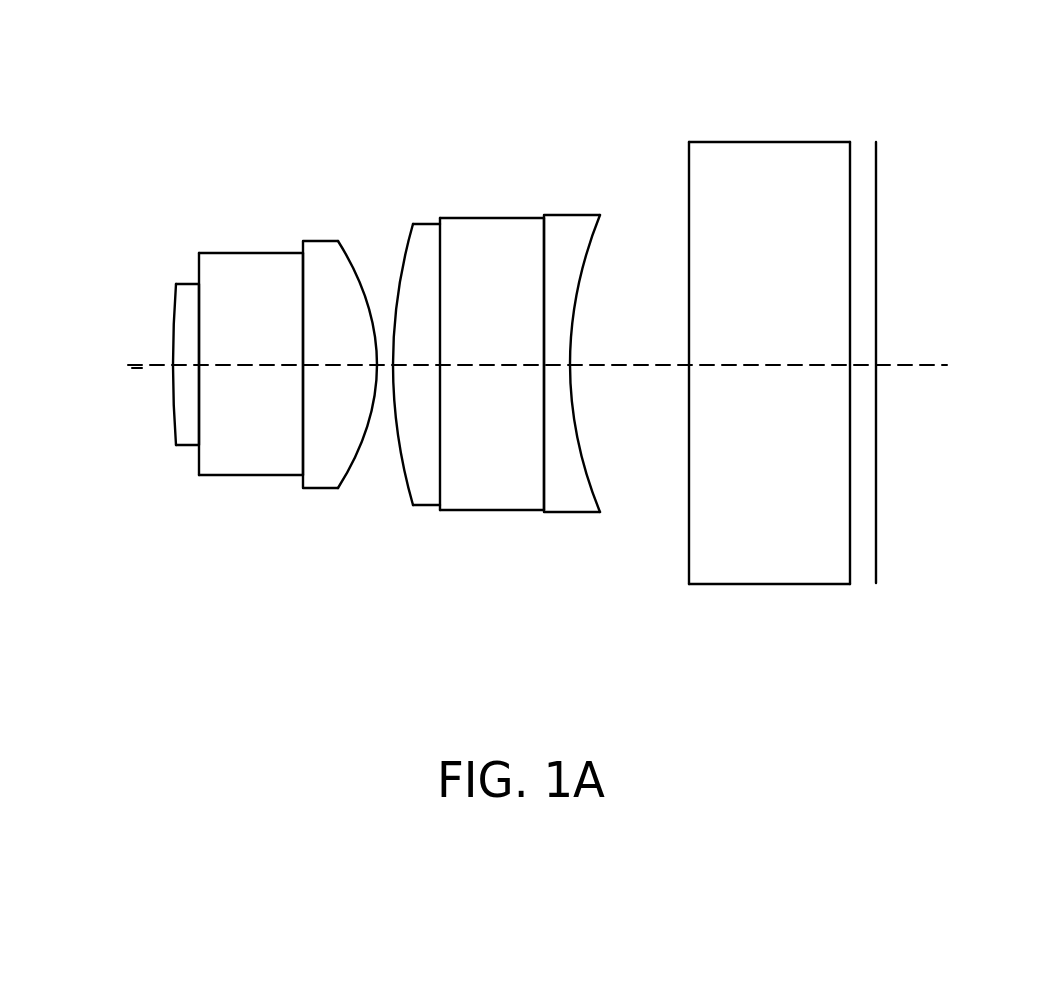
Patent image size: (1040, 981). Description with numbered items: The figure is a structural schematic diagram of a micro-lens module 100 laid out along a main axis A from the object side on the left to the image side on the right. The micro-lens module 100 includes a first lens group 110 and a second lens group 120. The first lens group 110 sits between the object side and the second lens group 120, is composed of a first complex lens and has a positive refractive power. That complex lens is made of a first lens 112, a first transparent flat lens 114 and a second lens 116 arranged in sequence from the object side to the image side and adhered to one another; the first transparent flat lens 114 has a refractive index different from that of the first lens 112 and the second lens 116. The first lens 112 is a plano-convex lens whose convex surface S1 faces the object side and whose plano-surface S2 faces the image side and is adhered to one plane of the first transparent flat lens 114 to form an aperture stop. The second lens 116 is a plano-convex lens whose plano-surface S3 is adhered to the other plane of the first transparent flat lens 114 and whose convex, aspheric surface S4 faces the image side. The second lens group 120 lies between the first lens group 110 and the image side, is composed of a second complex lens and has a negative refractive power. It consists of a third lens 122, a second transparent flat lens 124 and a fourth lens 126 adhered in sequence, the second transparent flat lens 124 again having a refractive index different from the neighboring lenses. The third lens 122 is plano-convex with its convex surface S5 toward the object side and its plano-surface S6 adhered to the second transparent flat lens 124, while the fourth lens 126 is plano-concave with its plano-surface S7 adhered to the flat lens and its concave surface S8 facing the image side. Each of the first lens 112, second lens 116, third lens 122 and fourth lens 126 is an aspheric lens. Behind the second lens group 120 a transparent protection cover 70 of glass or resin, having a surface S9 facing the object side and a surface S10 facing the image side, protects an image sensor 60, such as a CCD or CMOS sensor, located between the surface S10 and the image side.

The micro-lens module 100 is at (535, 382).
The first lens group 110 is at (253, 395).
The first lens 112 is at (169, 390).
The first transparent flat lens 114 is at (250, 382).
The second lens 116 is at (339, 372).
The second lens group 120 is at (505, 391).
The third lens 122 is at (420, 368).
The second transparent flat lens 124 is at (491, 368).
The fourth lens 126 is at (586, 370).
The protection cover 70 is at (761, 359).
The image sensor 60 is at (875, 563).
The main axis A is at (137, 370).
The convex surface S1 is at (172, 302).
The plano-surface S2 is at (205, 272).
The plano-surface S3 is at (300, 276).
The convex surface S4 is at (346, 247).
The convex surface S5 is at (408, 234).
The plano-surface S6 is at (445, 242).
The plano-surface S7 is at (540, 240).
The concave surface S8 is at (600, 230).
The surface S9 is at (686, 160).
The surface S10 is at (854, 149).